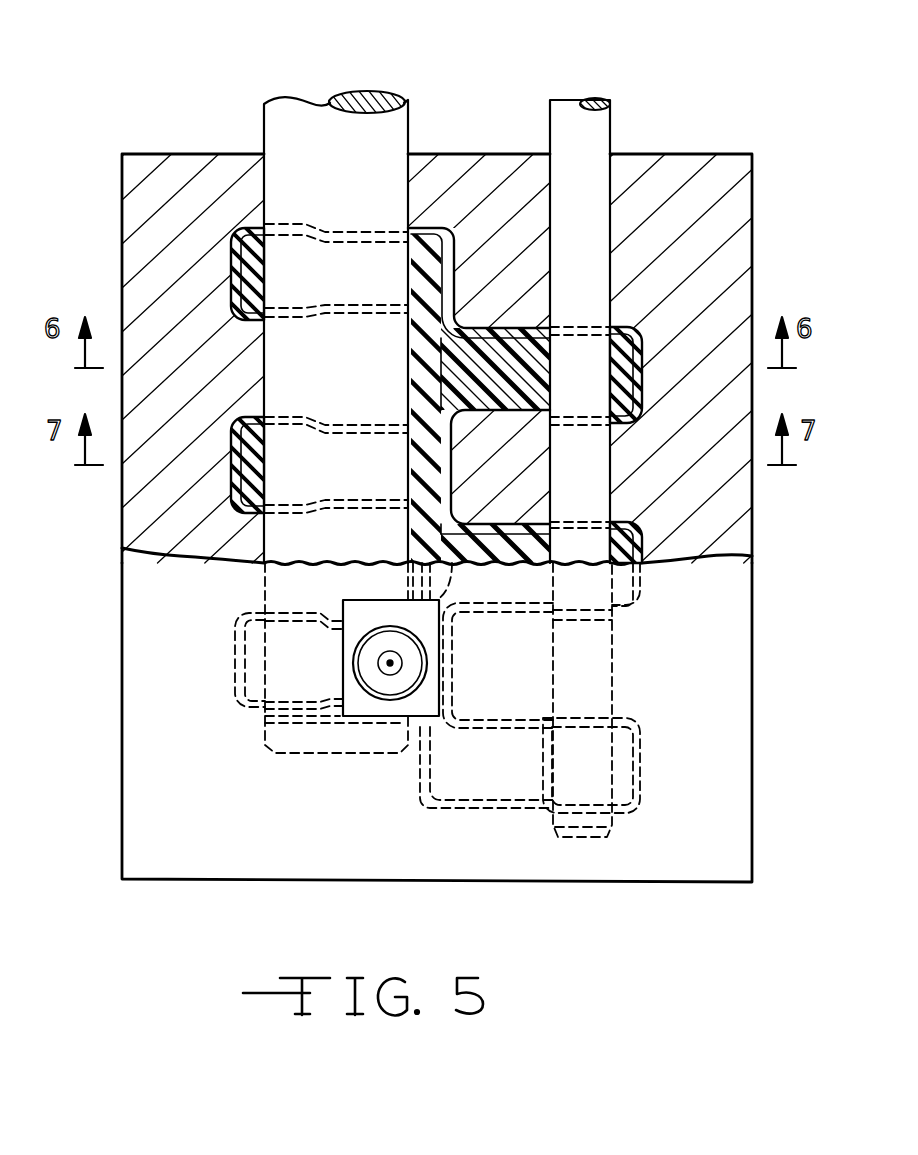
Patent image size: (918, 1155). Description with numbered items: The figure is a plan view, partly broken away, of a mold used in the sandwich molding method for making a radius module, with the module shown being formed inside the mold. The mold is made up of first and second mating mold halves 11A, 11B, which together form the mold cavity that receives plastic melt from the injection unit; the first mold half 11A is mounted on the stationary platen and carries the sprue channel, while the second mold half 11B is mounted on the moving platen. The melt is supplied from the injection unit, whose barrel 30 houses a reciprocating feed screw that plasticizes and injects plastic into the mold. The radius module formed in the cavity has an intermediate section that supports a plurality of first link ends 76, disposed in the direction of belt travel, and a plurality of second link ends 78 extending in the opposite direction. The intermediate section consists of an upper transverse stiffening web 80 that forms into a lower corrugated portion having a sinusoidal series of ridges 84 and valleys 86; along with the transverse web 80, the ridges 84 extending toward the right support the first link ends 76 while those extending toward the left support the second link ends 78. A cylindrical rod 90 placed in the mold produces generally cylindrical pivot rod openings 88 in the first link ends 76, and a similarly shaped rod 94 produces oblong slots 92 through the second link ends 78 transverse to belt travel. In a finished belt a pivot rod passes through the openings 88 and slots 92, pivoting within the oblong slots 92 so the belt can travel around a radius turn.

The first mold half 11A is at (726, 765).
The second mold half 11B is at (144, 162).
The barrel 30 is at (377, 680).
The first link ends 76 is at (640, 363).
The second link ends 78 is at (243, 268).
The transverse stiffening web 80 is at (453, 243).
The ridges 84 is at (483, 317).
The valleys 86 is at (435, 371).
The pivot rod openings 88 is at (618, 328).
The cylindrical rod 90 is at (597, 124).
The oblong slots 92 is at (242, 232).
The rod 94 is at (385, 130).